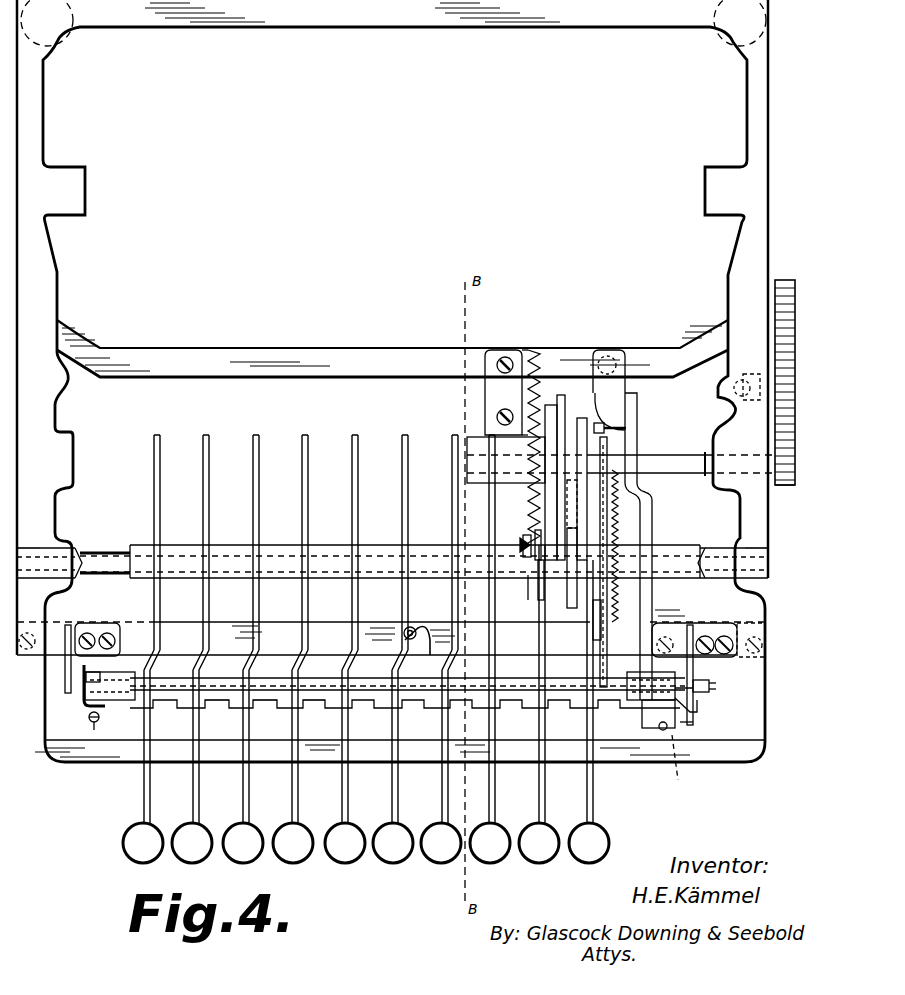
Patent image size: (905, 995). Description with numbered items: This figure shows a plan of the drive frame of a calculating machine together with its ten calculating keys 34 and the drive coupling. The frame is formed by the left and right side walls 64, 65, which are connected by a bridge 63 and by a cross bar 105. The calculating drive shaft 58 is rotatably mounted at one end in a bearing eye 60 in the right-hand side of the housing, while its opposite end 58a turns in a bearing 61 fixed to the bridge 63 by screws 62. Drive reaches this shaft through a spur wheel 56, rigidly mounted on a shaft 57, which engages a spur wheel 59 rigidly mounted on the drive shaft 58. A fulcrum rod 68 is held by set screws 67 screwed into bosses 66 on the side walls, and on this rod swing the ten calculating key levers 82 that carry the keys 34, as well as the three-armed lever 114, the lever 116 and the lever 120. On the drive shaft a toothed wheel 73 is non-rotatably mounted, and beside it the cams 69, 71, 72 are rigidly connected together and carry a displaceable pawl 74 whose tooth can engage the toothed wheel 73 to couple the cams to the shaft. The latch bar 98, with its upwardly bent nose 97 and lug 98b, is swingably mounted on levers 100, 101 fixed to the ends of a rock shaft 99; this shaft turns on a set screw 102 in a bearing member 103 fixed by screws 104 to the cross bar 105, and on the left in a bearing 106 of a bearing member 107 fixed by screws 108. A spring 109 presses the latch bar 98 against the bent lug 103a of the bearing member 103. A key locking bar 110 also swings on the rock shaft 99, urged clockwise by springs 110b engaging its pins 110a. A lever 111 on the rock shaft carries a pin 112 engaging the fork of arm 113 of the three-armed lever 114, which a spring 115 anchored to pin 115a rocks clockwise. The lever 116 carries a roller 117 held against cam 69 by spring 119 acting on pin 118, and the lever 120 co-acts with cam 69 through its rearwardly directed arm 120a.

The calculating keys 34 is at (252, 857).
The spur wheel 56 is at (790, 280).
The shaft 57 is at (748, 398).
The calculating drive shaft 58 is at (660, 460).
The opposite end of the shaft 58a is at (476, 460).
The spur wheel 59 is at (789, 488).
The bearing eye 60 is at (735, 430).
The bearing 61 is at (493, 413).
The screws 62 is at (503, 410).
The bridge 63 is at (155, 358).
The side wall 64 is at (40, 432).
The side wall 65 is at (735, 328).
The bosses 66 is at (40, 548).
The set screws 67 is at (78, 572).
The fulcrum rod 68 is at (98, 565).
The cam 69 is at (551, 418).
The cam 71 is at (563, 410).
The cam 72 is at (583, 425).
The toothed wheel 73 is at (604, 440).
The pawl 74 is at (607, 383).
The calculating key levers 82 is at (246, 790).
The nose 97 is at (205, 708).
The latch bar 98 is at (330, 703).
The lug 98b is at (418, 640).
The rock shaft 99 is at (256, 703).
The lever 100 is at (84, 708).
The lever 101 is at (692, 710).
The set screw 102 is at (702, 690).
The bearing member 103 is at (695, 668).
The bent lug 103a is at (688, 722).
The screws 104 is at (723, 636).
The cross bar 105 is at (30, 636).
The bearing 106 is at (80, 700).
The bearing member 107 is at (65, 675).
The screws 108 is at (92, 635).
The spring 109 is at (408, 628).
The key locking bar 110 is at (125, 672).
The pins 110a is at (100, 718).
The springs 110b is at (96, 732).
The lever 111 is at (597, 645).
The pin 112 is at (601, 620).
The arm 113 is at (541, 580).
The three-armed lever 114 is at (605, 538).
The spring 115 is at (607, 519).
The pin 115a is at (632, 428).
The lever 116 is at (525, 540).
The roller 117 is at (532, 545).
The pin 118 is at (519, 538).
The spring 119 is at (536, 420).
The lever 120 is at (568, 607).
The rearwardly directed arm 120a is at (528, 575).